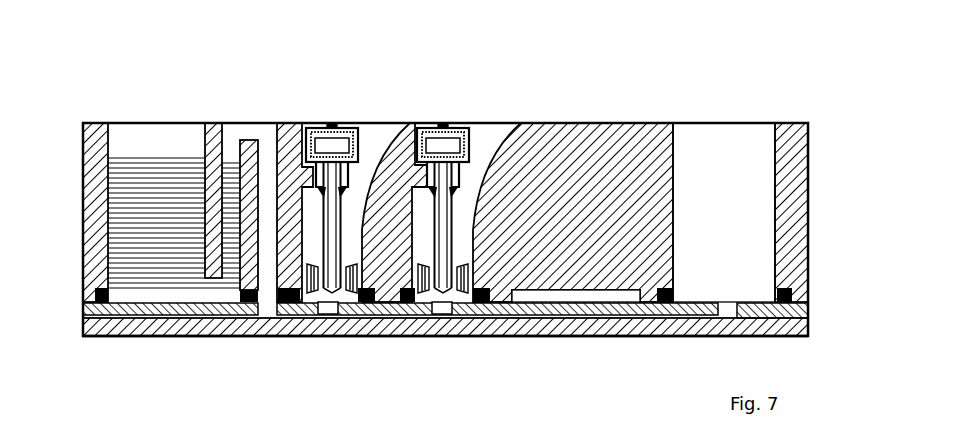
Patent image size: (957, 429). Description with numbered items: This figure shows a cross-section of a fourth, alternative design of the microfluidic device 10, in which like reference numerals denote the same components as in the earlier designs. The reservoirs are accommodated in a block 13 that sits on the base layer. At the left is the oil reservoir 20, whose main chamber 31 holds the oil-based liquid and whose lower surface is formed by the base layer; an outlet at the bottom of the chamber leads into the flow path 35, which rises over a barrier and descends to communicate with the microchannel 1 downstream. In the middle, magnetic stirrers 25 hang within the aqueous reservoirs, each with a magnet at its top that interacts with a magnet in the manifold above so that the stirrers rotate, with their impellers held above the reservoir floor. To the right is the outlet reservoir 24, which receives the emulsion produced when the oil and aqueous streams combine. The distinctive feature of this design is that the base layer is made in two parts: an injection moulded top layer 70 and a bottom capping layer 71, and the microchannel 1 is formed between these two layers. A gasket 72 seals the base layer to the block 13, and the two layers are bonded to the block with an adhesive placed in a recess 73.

The microfluidic device 10 is at (790, 105).
The oil reservoir 20 is at (148, 138).
The main chamber 31 is at (120, 213).
The flow path 35 is at (263, 140).
The magnetic stirrer 25 is at (430, 170).
The outlet reservoir 24 is at (724, 212).
The block 13 is at (805, 212).
The recess 73 is at (545, 296).
The top layer 70 is at (83, 305).
The microchannel 1 is at (603, 320).
The bottom capping layer 71 is at (97, 334).
The gasket 72 is at (118, 320).